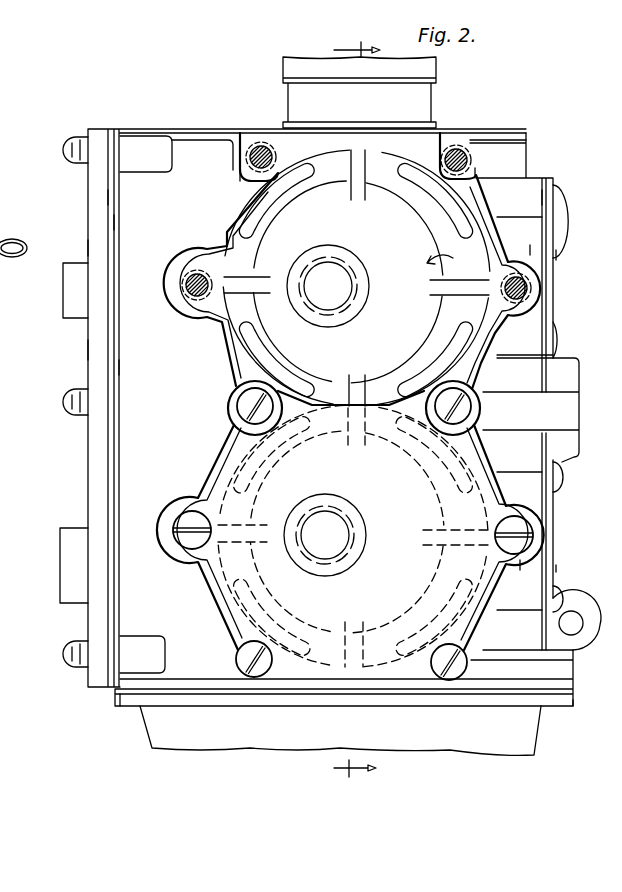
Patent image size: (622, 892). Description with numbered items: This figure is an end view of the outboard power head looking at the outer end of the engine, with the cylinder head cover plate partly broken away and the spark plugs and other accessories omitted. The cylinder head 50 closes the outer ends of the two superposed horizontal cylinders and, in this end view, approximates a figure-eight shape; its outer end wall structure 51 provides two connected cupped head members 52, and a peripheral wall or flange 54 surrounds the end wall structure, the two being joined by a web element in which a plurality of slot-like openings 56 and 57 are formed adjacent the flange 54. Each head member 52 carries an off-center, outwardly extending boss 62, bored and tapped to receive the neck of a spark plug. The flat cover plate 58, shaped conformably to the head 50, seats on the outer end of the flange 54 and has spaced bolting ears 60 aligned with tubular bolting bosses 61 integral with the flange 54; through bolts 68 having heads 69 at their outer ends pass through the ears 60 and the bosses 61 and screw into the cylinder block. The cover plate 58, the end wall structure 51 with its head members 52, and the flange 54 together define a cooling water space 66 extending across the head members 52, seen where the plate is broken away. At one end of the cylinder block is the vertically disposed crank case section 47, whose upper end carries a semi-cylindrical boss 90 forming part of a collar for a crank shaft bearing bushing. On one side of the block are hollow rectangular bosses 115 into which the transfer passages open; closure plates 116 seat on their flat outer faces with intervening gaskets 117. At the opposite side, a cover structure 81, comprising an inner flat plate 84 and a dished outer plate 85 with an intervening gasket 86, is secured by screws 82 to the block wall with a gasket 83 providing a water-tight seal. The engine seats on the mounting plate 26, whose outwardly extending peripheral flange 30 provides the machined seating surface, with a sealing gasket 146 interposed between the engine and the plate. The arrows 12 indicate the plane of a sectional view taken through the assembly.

The section line 12 is at (357, 410).
The mounting plate 26 is at (190, 735).
The peripheral flange 30 is at (573, 708).
The crank case section 47 is at (520, 161).
The cylinder head 50 is at (210, 342).
The outer end wall structure 51 is at (453, 260).
The cupped head members 52 is at (422, 323).
The peripheral wall or flange 54 is at (494, 333).
The slot-like openings 56 is at (447, 200).
The slot-like openings 57 is at (278, 388).
The cover plate 58 is at (491, 500).
The bolting ears 60 is at (190, 557).
The bolting bosses 61 is at (482, 158).
The boss 62 is at (362, 293).
The cooling water space 66 is at (257, 342).
The through bolts 68 is at (261, 146).
The heads 69 is at (228, 400).
The cover structure 81 is at (76, 355).
The screws 82 is at (70, 147).
The gasket 83 is at (118, 222).
The inner flat plate 84 is at (115, 197).
The outer plate 85 is at (90, 248).
The gasket 86 is at (108, 368).
The semi-cylindrical boss 90 is at (421, 103).
The hollow rectangular bosses 115 is at (530, 250).
The closure plates 116 is at (552, 255).
The gaskets 117 is at (545, 200).
The sealing gasket 146 is at (137, 690).